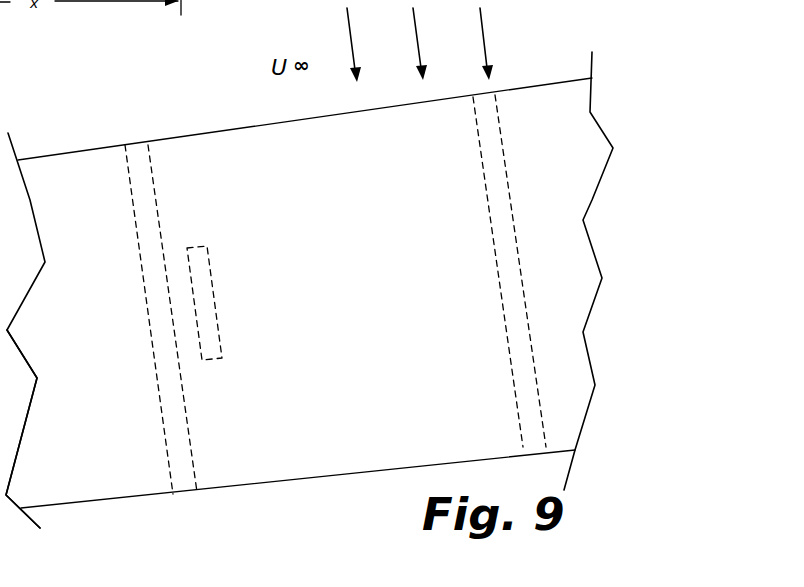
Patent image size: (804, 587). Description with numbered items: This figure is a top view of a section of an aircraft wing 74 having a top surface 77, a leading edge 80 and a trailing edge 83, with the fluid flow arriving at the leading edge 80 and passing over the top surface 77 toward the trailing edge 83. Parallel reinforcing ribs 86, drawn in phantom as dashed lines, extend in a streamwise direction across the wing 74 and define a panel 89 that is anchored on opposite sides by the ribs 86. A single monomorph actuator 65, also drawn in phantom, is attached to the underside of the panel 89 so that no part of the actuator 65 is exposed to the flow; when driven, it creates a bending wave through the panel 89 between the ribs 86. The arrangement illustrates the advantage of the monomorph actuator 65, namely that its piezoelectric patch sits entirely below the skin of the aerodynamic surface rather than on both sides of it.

The aircraft wing 74 is at (182, 127).
The leading edge 80 is at (286, 125).
The top surface 77 is at (337, 464).
The trailing edge 83 is at (67, 503).
The reinforcing ribs 86 is at (200, 455).
The monomorph actuator 65 is at (213, 302).
The panel 89 is at (417, 349).